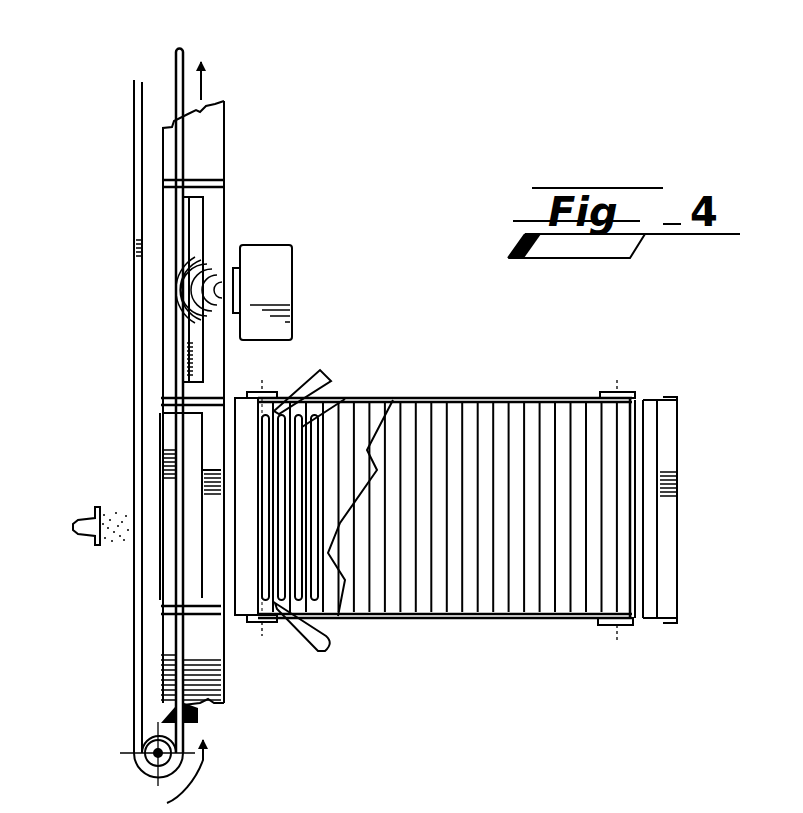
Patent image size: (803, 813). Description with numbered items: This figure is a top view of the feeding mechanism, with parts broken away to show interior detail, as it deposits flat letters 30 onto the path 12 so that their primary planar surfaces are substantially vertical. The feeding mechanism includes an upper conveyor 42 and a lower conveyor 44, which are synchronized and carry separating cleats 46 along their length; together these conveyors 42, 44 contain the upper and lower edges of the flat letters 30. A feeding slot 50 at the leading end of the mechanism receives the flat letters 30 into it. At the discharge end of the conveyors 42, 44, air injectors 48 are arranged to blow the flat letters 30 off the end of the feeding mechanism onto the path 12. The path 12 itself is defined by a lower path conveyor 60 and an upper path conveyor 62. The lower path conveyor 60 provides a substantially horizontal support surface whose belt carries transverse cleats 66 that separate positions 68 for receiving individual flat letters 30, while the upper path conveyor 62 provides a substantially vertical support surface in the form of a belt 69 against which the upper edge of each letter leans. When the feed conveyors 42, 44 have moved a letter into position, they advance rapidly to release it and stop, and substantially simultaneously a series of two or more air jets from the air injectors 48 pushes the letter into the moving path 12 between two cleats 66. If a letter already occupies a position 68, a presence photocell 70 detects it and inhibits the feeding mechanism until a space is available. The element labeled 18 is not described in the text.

The path 12 is at (248, 168).
The sensor 18 is at (283, 270).
The flat letters 30 is at (216, 232).
The upper conveyor 42 is at (557, 392).
The lower conveyor 44 is at (379, 388).
The separating cleats 46 is at (532, 417).
The air injectors 48 is at (320, 371).
The feeding slot 50 is at (656, 403).
The lower path conveyor 60 is at (246, 713).
The upper path conveyor 62 is at (108, 632).
The transverse cleats 66 is at (207, 178).
The positions 68 is at (198, 214).
The belt 69 is at (176, 66).
The presence photocell 70 is at (90, 546).